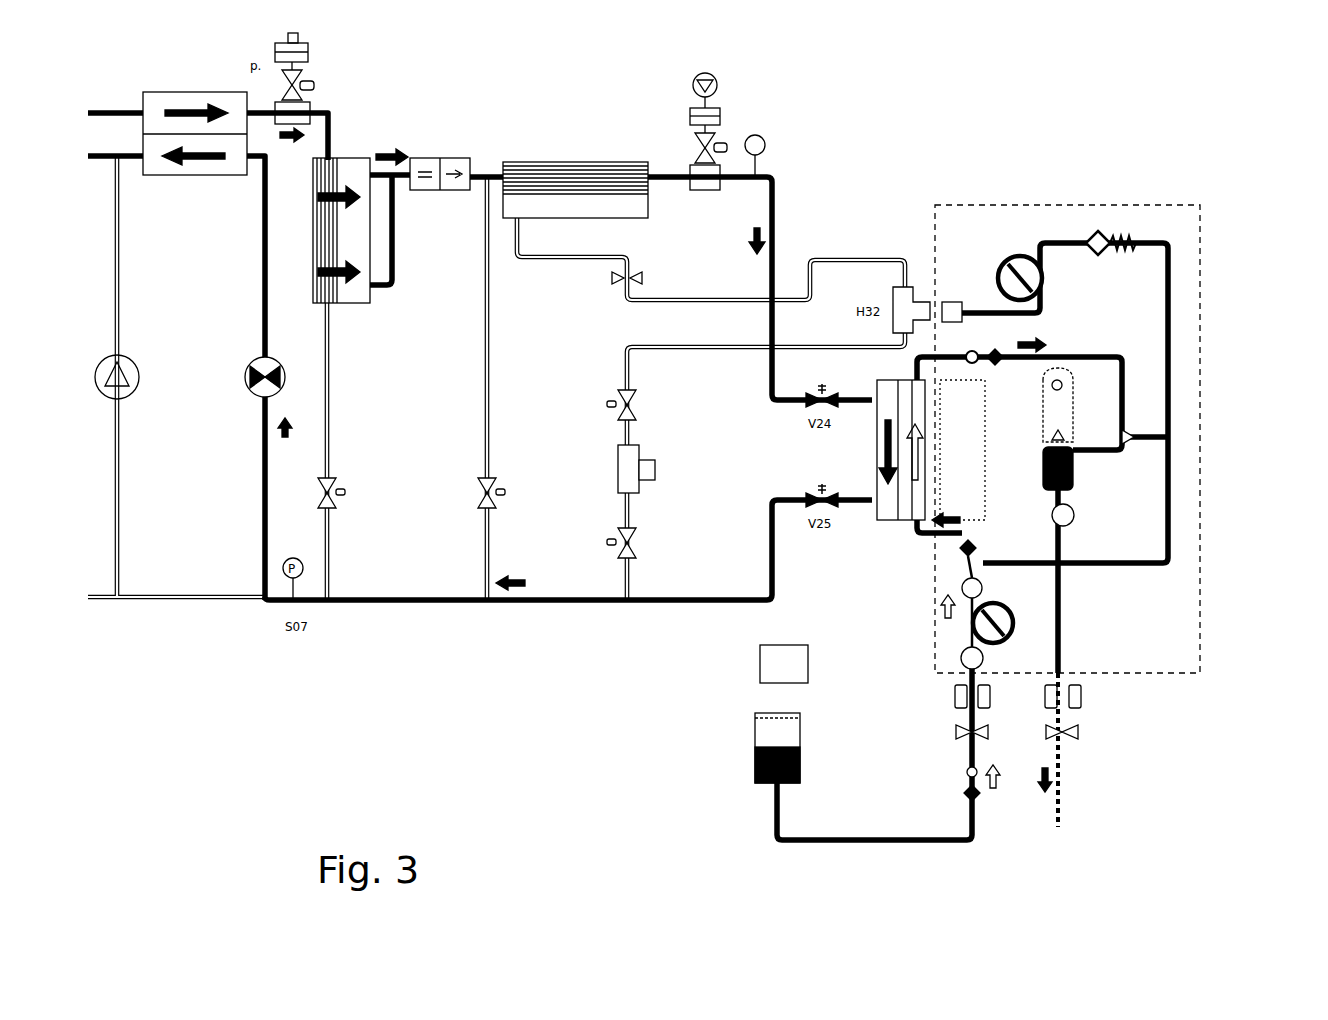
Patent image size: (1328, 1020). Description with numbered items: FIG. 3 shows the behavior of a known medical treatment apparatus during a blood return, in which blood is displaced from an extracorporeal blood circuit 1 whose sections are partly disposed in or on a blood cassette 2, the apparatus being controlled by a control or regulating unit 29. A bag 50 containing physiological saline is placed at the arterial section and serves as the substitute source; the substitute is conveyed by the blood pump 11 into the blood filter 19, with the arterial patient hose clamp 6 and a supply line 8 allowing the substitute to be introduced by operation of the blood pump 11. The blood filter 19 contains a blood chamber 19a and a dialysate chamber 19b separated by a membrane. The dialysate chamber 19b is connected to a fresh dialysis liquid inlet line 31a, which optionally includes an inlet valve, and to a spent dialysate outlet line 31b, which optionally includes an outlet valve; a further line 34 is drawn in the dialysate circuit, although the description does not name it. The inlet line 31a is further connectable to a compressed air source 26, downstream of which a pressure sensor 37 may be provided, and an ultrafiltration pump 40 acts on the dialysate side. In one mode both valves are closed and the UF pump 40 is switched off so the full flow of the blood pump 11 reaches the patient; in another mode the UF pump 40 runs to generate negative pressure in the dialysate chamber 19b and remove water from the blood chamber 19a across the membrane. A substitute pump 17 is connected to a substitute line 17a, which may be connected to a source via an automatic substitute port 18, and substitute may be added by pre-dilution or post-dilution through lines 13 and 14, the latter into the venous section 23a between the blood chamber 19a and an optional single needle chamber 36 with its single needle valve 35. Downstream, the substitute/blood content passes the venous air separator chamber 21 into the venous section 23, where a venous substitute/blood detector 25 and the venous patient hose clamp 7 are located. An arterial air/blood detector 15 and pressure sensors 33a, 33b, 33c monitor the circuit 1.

The extracorporeal blood circuit 1 is at (1132, 312).
The blood cassette 2 is at (1186, 229).
The arterial patient hose clamp 6 is at (960, 738).
The venous patient hose clamp 7 is at (1085, 733).
The supply line 8 is at (975, 645).
The blood pump 11 is at (960, 600).
The addition site for substitute (pre-dilution) 13 is at (985, 578).
The addition site for substitute (post-dilution) 14 is at (1128, 437).
The arterial air/blood detector 15 is at (958, 695).
The substitute pump 17 is at (1067, 416).
The substitute line 17a is at (1145, 242).
The automatic substitute port 18 is at (950, 300).
The blood filter 19 is at (902, 496).
The blood chamber 19a is at (920, 495).
The dialysate chamber 19b is at (877, 410).
The venous air separator chamber 21 is at (1075, 455).
The venous section 23 is at (1070, 785).
The venous section 23a is at (1105, 350).
The venous substitute/blood detector 25 is at (1082, 693).
The compressed air source 26 is at (728, 128).
The control or regulating unit 29 is at (784, 664).
The fresh dialysis liquid inlet line 31a is at (775, 247).
The spent dialysate outlet line 31b is at (705, 603).
The pressure sensor 33a is at (985, 658).
The pressure sensor 33b is at (1076, 512).
The pressure sensor 33c is at (935, 589).
The bypass line 34 is at (620, 603).
The single needle valve 35 is at (1037, 458).
The single needle chamber 36 is at (1133, 433).
The pressure sensor 37 is at (762, 142).
The ultrafiltration pump 40 is at (253, 395).
The bag 50 is at (755, 757).